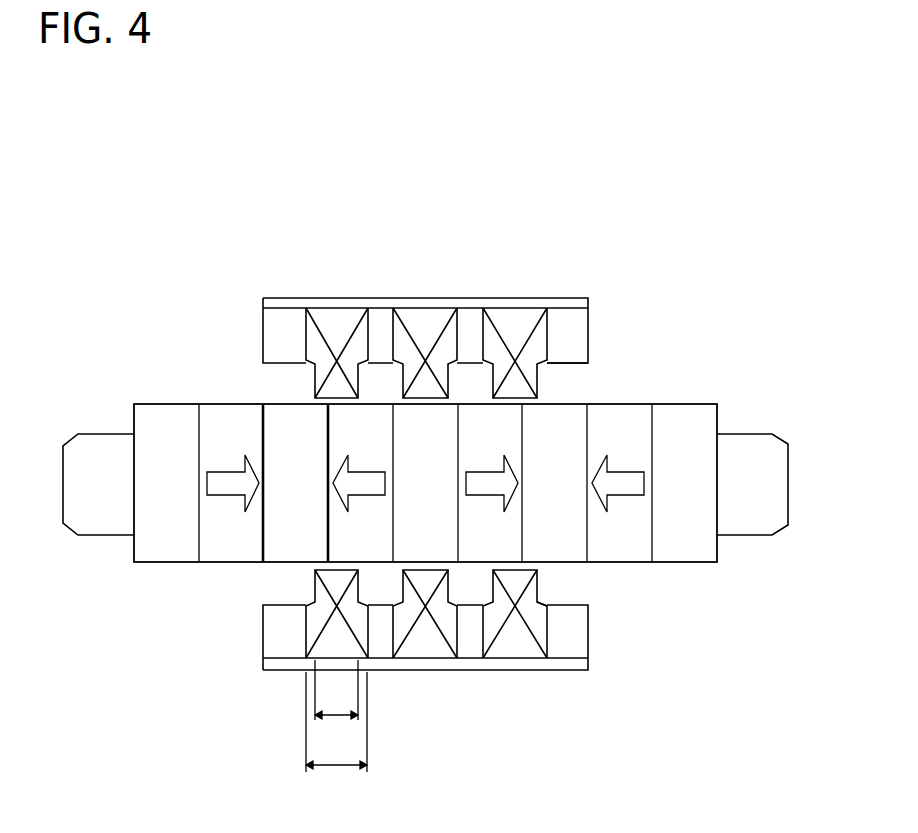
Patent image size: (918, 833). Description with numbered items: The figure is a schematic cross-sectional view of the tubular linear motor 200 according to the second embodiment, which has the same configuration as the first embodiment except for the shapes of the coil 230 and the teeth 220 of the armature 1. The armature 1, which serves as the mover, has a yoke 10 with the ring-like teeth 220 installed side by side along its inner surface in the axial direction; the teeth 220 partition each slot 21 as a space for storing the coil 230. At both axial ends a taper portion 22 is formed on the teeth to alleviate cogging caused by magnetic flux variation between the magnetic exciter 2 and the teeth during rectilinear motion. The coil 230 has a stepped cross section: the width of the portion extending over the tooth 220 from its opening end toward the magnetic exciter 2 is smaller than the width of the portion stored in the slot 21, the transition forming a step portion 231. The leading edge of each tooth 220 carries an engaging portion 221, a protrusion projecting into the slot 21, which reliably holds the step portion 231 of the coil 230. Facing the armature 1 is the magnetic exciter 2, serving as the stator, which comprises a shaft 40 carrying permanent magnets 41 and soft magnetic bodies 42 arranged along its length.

The tubular linear motor 200 is at (158, 186).
The armature 1 is at (398, 297).
The yoke 10 is at (510, 298).
The tooth 220 is at (382, 318).
The coil 230 is at (420, 323).
The step portion 231 is at (546, 370).
The magnetic exciter 2 is at (185, 404).
The slot 21 is at (545, 633).
The taper portion 22 is at (280, 602).
The engaging portion 221 is at (542, 600).
The shaft 40 is at (110, 450).
The permanent magnet 41 is at (348, 538).
The soft magnetic body 42 is at (677, 543).